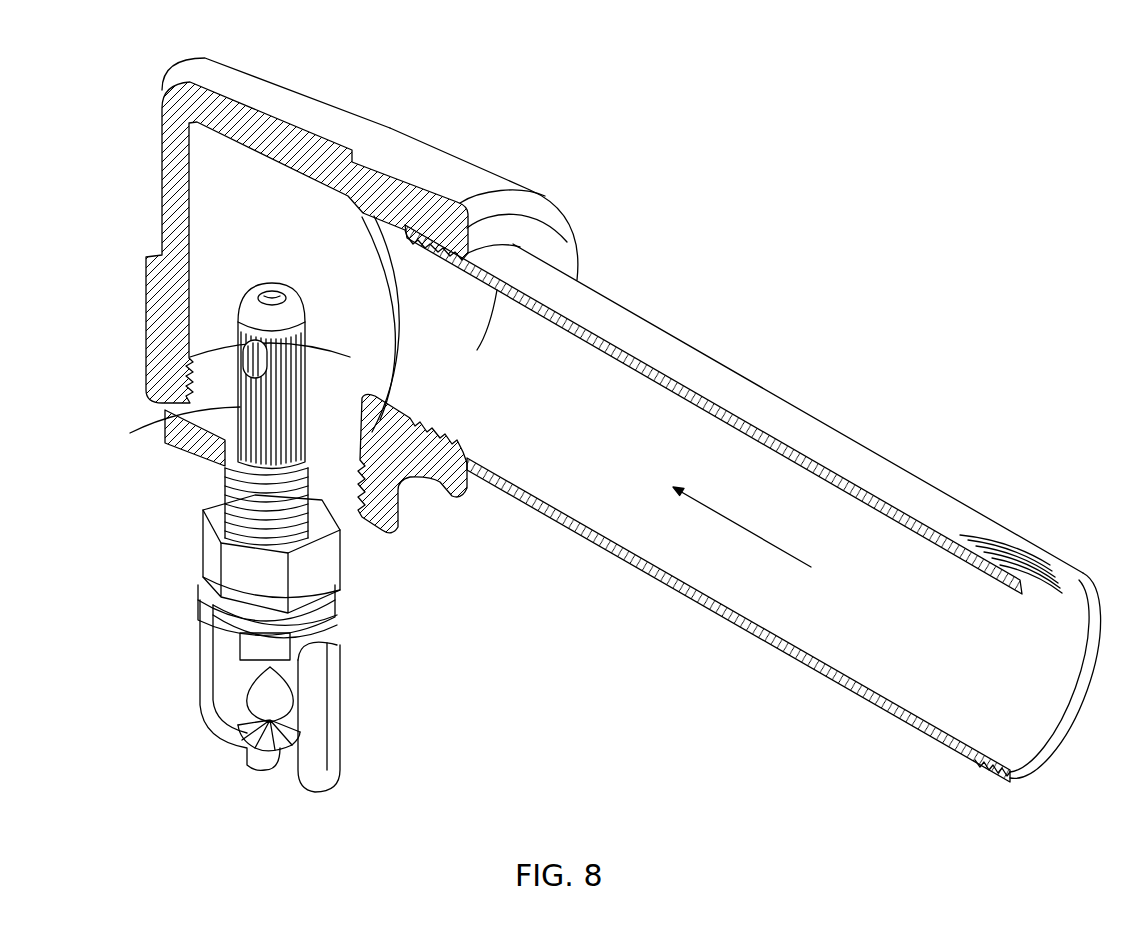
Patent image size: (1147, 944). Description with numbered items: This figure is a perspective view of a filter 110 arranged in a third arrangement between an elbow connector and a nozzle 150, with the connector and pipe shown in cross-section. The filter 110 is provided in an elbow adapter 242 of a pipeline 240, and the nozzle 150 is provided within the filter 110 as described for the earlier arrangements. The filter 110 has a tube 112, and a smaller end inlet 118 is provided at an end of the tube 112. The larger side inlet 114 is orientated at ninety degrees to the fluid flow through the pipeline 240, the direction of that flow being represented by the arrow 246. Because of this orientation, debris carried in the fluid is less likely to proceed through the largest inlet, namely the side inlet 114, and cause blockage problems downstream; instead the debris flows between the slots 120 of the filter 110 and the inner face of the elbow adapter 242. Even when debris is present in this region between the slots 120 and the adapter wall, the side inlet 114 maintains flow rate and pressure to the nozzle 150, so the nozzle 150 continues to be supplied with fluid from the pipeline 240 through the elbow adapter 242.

The filter 110 is at (220, 465).
The tube 112 is at (238, 408).
The side inlet 114 is at (240, 348).
The end inlet 118 is at (255, 292).
The slots 120 is at (357, 548).
The nozzle 150 is at (342, 733).
The pipeline 240 is at (790, 420).
The elbow adapter 242 is at (303, 110).
The arrow 246 is at (733, 515).